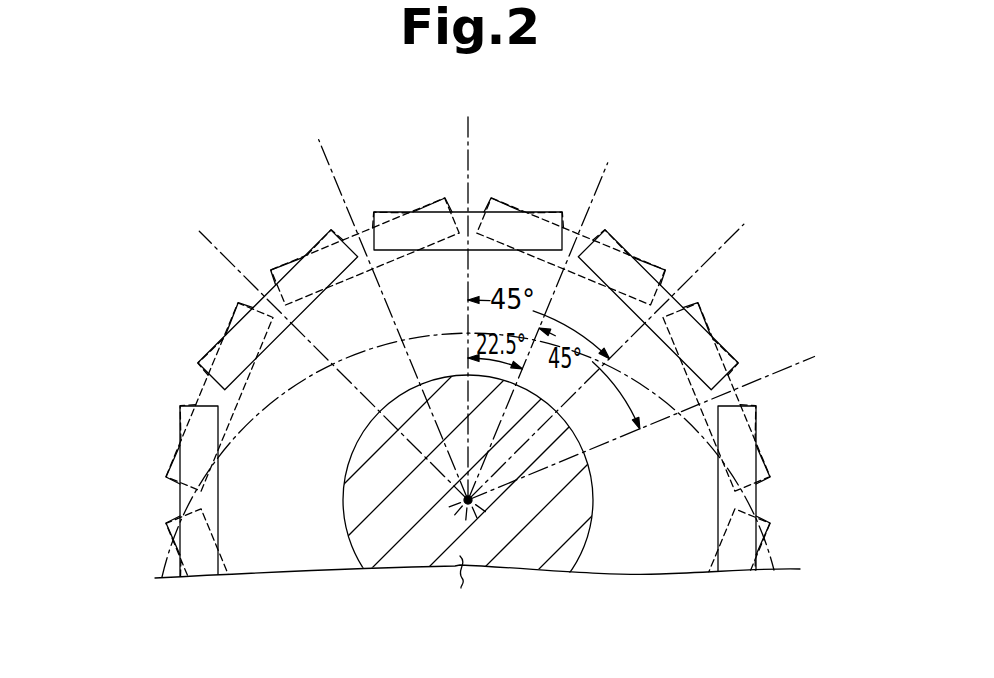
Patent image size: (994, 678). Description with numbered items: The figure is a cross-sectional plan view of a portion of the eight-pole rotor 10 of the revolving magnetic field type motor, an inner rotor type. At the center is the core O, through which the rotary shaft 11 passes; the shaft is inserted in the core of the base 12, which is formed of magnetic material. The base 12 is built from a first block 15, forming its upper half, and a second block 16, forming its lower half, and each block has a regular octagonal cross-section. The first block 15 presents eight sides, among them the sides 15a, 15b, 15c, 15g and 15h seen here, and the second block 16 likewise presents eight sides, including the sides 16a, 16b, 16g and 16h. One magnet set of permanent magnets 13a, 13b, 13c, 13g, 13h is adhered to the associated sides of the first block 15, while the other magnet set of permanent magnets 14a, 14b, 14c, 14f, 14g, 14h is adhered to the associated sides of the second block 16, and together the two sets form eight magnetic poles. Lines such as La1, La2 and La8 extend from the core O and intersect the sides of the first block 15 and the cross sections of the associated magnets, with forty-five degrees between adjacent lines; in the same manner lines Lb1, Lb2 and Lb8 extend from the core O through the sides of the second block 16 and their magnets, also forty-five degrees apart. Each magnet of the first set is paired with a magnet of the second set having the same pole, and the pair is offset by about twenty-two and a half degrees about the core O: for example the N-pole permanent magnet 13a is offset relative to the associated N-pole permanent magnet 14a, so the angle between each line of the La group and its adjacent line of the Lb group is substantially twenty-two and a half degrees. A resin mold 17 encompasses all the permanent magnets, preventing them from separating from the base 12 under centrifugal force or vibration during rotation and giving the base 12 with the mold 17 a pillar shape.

The rotor 10 is at (763, 163).
The rotary shaft 11 is at (466, 572).
The base 12 is at (738, 542).
The permanent magnet 13a is at (471, 205).
The permanent magnet 13b is at (695, 312).
The permanent magnet 13c is at (738, 500).
The permanent magnet 13g is at (194, 500).
The permanent magnet 13h is at (244, 314).
The permanent magnet 14a is at (588, 257).
The permanent magnet 14b is at (749, 397).
The permanent magnet 14c is at (771, 538).
The permanent magnet 14f is at (163, 535).
The permanent magnet 14g is at (210, 397).
The permanent magnet 14h is at (350, 263).
The first block 15 is at (738, 516).
The side 15a is at (456, 250).
The side 15b is at (658, 337).
The side 15c is at (716, 505).
The side 15g is at (218, 495).
The side 15h is at (282, 337).
The second block 16 is at (755, 593).
The side 16a is at (580, 283).
The side 16b is at (708, 432).
The side 16g is at (240, 410).
The side 16h is at (346, 281).
The resin mold 17 is at (430, 196).
The core O is at (480, 503).
The line La1 is at (470, 131).
The line La2 is at (748, 236).
The line La8 is at (200, 232).
The line Lb1 is at (610, 163).
The line Lb2 is at (792, 350).
The line Lb8 is at (322, 152).